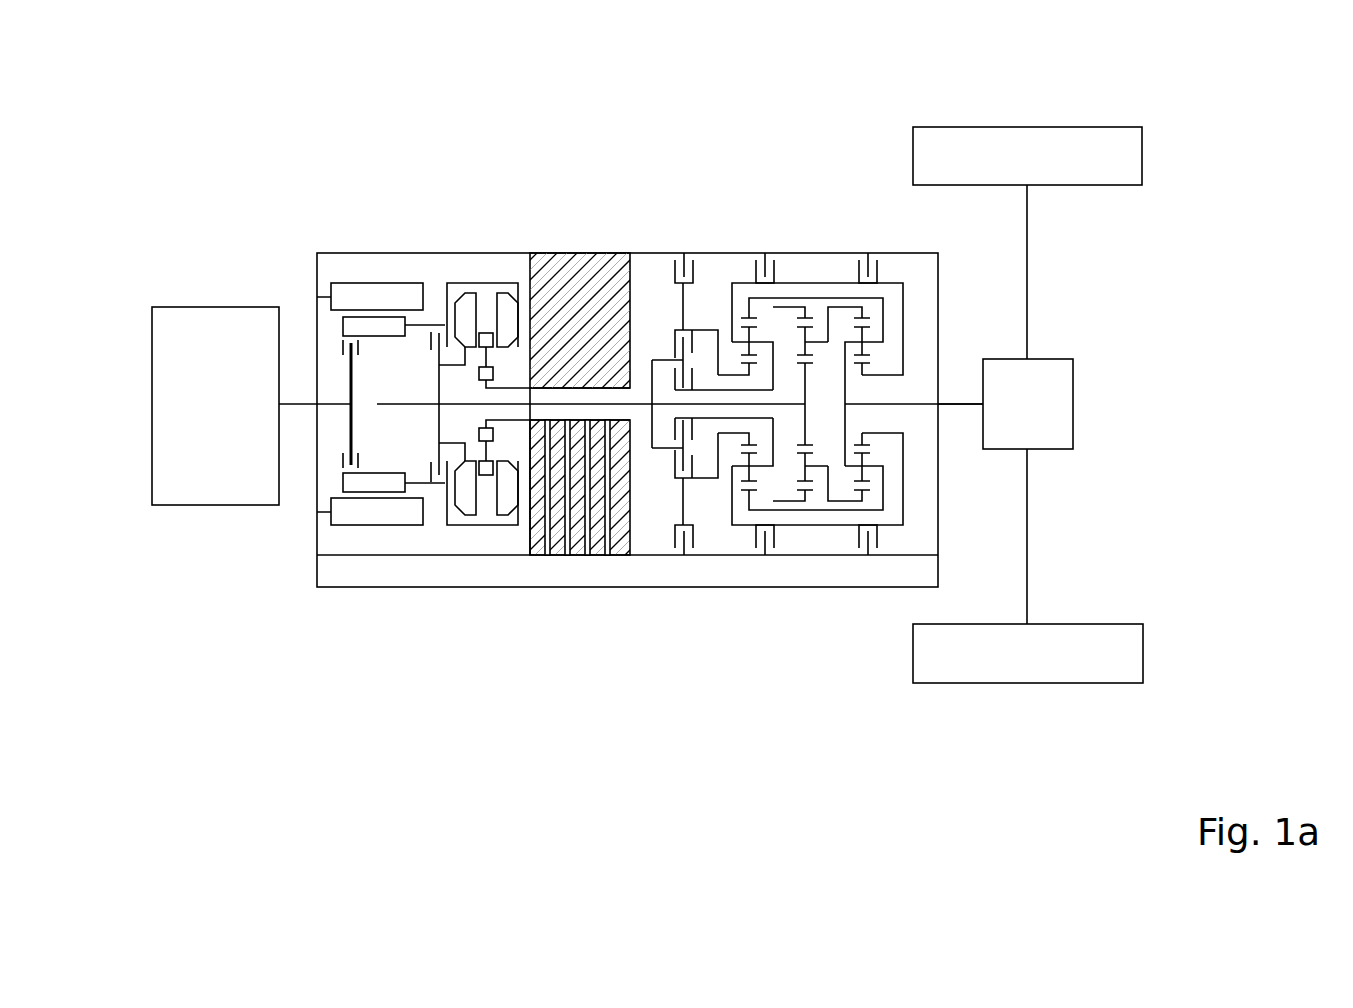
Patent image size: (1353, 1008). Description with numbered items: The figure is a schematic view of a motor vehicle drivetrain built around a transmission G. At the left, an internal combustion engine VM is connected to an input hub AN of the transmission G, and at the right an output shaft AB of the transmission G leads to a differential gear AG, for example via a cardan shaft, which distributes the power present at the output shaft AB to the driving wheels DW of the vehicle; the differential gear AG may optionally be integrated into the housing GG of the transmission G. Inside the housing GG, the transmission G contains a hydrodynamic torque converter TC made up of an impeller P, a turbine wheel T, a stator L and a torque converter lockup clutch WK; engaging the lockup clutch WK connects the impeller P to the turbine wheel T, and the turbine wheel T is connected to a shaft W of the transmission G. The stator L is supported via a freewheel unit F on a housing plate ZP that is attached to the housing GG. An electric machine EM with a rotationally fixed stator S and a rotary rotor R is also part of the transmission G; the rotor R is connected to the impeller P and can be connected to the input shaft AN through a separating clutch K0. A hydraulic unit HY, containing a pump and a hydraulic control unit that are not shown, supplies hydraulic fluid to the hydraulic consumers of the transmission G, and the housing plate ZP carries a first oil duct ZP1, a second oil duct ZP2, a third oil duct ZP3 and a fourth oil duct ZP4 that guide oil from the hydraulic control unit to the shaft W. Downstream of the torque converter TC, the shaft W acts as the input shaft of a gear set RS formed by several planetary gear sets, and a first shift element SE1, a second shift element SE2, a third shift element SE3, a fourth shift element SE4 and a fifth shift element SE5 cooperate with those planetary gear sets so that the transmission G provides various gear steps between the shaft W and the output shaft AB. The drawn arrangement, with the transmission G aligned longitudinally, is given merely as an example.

The internal combustion engine VM is at (203, 305).
The input hub AN is at (297, 403).
The rotor R is at (353, 328).
The electric machine EM is at (358, 280).
The stator S is at (377, 297).
The shaft W is at (383, 402).
The hydrodynamic torque converter TC is at (483, 424).
The housing plate ZP is at (581, 424).
The freewheel unit F is at (495, 372).
The first shift element SE1 is at (695, 250).
The second shift element SE2 is at (675, 330).
The third shift element SE3 is at (869, 256).
The fourth shift element SE4 is at (768, 560).
The fifth shift element SE5 is at (700, 436).
The gear set RS is at (797, 200).
The driving wheels DW is at (1117, 185).
The housing GG is at (907, 253).
The output shaft AB is at (953, 403).
The differential gear AG is at (1073, 405).
The transmission G is at (235, 652).
The torque converter lockup clutch WK is at (430, 471).
The separating clutch K0 is at (340, 466).
The turbine wheel T is at (465, 510).
The stator L is at (490, 475).
The impeller P is at (502, 510).
The first oil duct ZP1 is at (567, 540).
The second oil duct ZP2 is at (547, 540).
The third oil duct ZP3 is at (587, 540).
The fourth oil duct ZP4 is at (607, 540).
The hydraulic unit HY is at (850, 578).